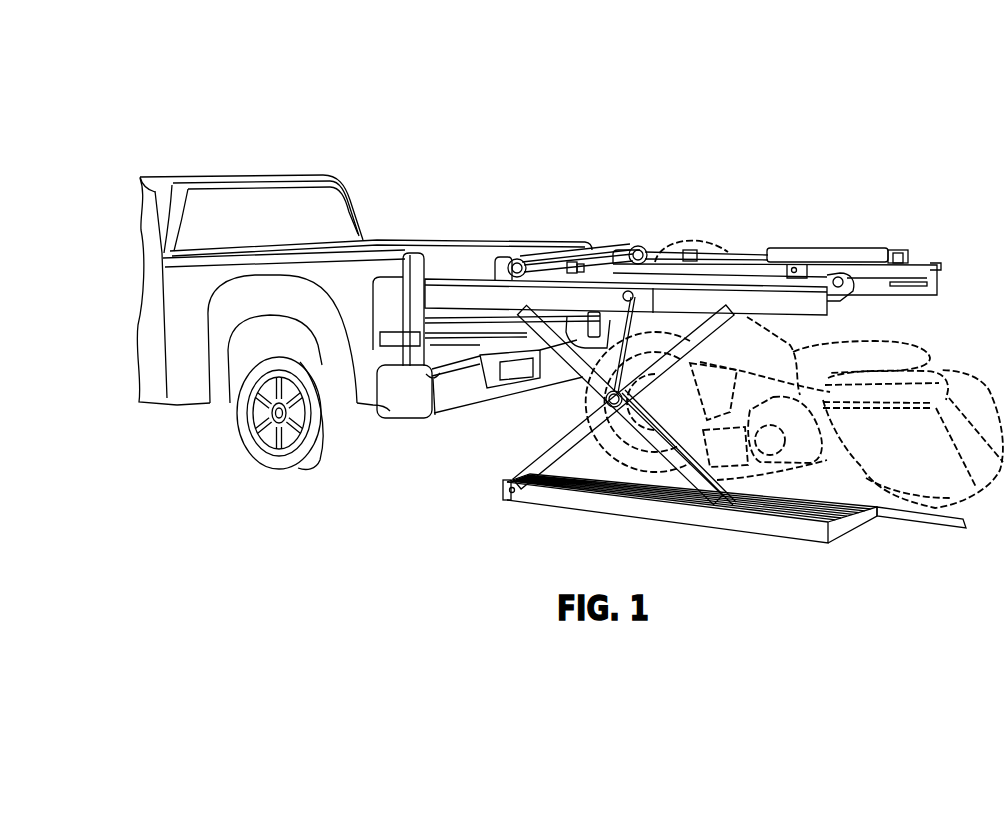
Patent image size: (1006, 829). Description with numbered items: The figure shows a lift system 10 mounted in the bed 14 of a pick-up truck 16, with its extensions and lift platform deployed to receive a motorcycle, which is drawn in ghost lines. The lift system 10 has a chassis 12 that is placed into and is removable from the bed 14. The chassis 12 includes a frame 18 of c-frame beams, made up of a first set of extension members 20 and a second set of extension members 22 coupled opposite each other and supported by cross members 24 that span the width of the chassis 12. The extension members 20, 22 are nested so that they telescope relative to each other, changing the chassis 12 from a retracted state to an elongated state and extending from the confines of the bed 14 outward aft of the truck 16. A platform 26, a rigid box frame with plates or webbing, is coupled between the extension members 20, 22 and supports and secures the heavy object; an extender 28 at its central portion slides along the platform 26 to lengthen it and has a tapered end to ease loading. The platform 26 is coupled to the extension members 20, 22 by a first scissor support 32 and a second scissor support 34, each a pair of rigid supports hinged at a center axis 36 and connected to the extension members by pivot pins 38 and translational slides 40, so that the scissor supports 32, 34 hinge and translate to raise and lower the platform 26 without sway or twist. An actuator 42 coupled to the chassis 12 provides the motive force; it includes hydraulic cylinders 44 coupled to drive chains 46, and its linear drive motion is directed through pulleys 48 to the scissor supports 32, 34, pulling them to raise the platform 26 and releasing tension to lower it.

The lift system 10 is at (688, 180).
The chassis 12 is at (623, 205).
The bed 14 is at (385, 200).
The pick-up truck 16 is at (267, 140).
The frame 18 is at (474, 265).
The first set of extension members 20 is at (933, 240).
The second set of extension members 22 is at (873, 315).
The cross members 24 is at (505, 257).
The lift platform 26 is at (783, 532).
The extender 28 is at (921, 525).
The first scissor support 32 is at (535, 457).
The second scissor support 34 is at (791, 338).
The center axis 36 is at (608, 401).
The pivot pins 38 is at (506, 490).
The translational slides 40 is at (894, 289).
The actuator 42 is at (785, 212).
The hydraulic cylinders 44 is at (872, 250).
The drive chains 46 is at (557, 263).
The pulleys 48 is at (642, 251).